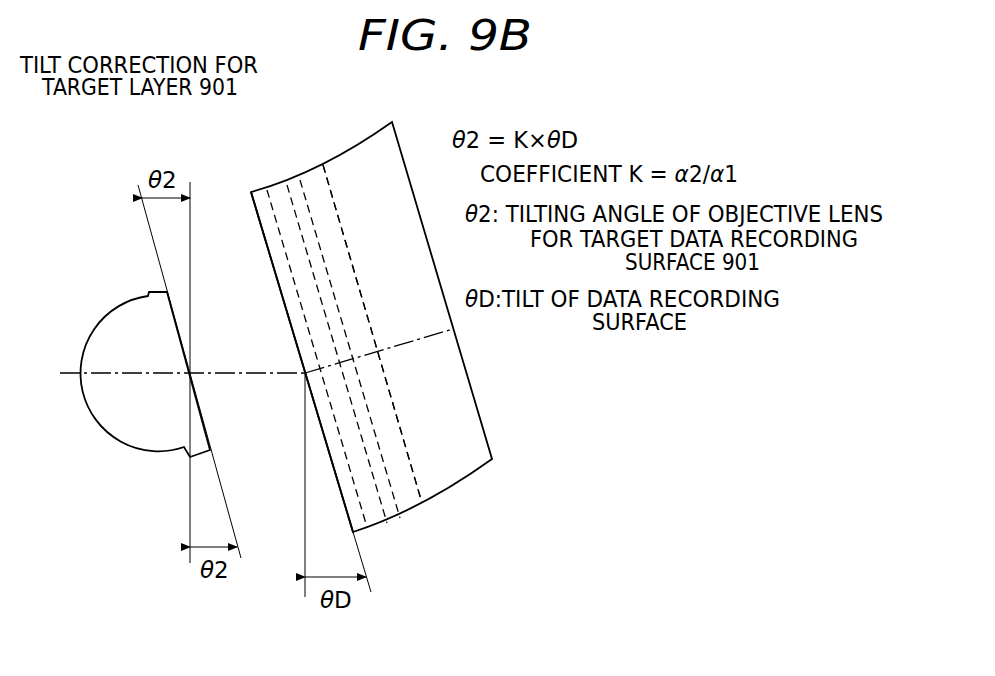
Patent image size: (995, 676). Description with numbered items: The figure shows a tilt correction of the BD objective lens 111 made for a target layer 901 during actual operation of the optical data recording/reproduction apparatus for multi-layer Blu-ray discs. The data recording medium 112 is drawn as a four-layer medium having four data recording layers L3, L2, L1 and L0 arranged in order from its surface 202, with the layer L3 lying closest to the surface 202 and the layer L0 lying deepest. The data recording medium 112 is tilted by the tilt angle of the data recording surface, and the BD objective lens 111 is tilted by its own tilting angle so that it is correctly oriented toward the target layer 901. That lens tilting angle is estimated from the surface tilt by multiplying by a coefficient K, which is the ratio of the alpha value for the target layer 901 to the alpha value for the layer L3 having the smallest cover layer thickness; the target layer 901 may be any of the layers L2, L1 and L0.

The BD objective lens 111 is at (140, 427).
The data recording medium 112 is at (452, 478).
The surface 202 is at (288, 313).
The target layer 901 is at (404, 520).
The data recording layer L0 is at (320, 165).
The data recording layer L1 is at (302, 182).
The data recording layer L2 is at (285, 185).
The data recording layer L3 is at (268, 188).